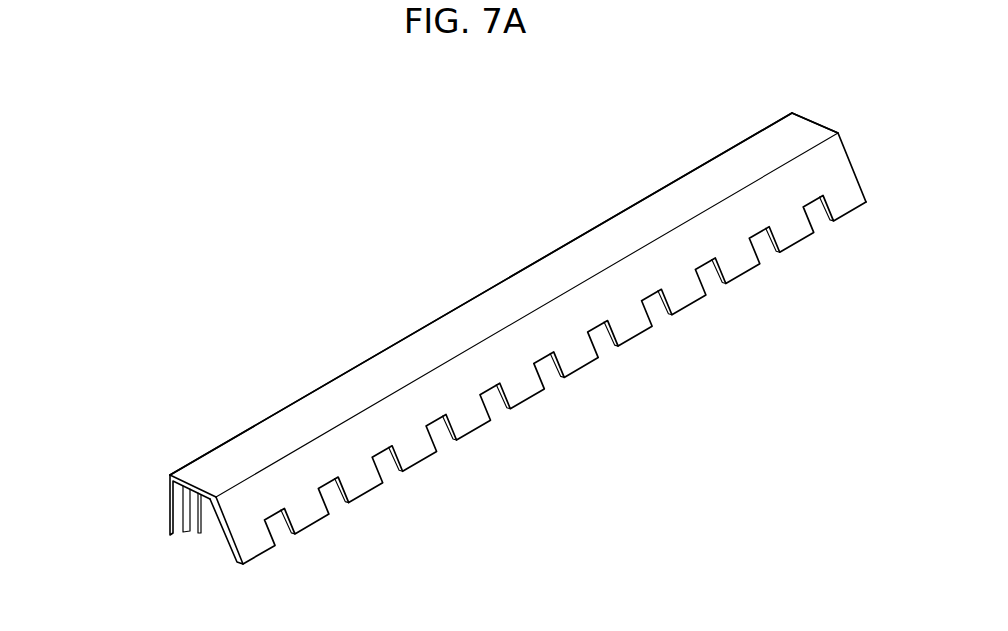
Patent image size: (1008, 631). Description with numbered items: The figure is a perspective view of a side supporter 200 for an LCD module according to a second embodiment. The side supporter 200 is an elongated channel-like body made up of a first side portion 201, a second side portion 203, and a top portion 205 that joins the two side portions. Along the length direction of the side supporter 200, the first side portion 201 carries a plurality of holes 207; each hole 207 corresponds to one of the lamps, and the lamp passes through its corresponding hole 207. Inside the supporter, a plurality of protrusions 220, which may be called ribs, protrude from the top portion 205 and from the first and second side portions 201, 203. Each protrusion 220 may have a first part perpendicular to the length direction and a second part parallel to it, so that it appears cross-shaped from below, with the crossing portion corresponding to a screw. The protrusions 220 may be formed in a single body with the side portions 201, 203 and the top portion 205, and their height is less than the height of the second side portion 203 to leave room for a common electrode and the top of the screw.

The side supporter 200 is at (459, 328).
The first side portion 201 is at (228, 528).
The second side portion 203 is at (168, 506).
The top portion 205 is at (243, 448).
The holes 207 is at (393, 473).
The protrusion 220 is at (217, 535).